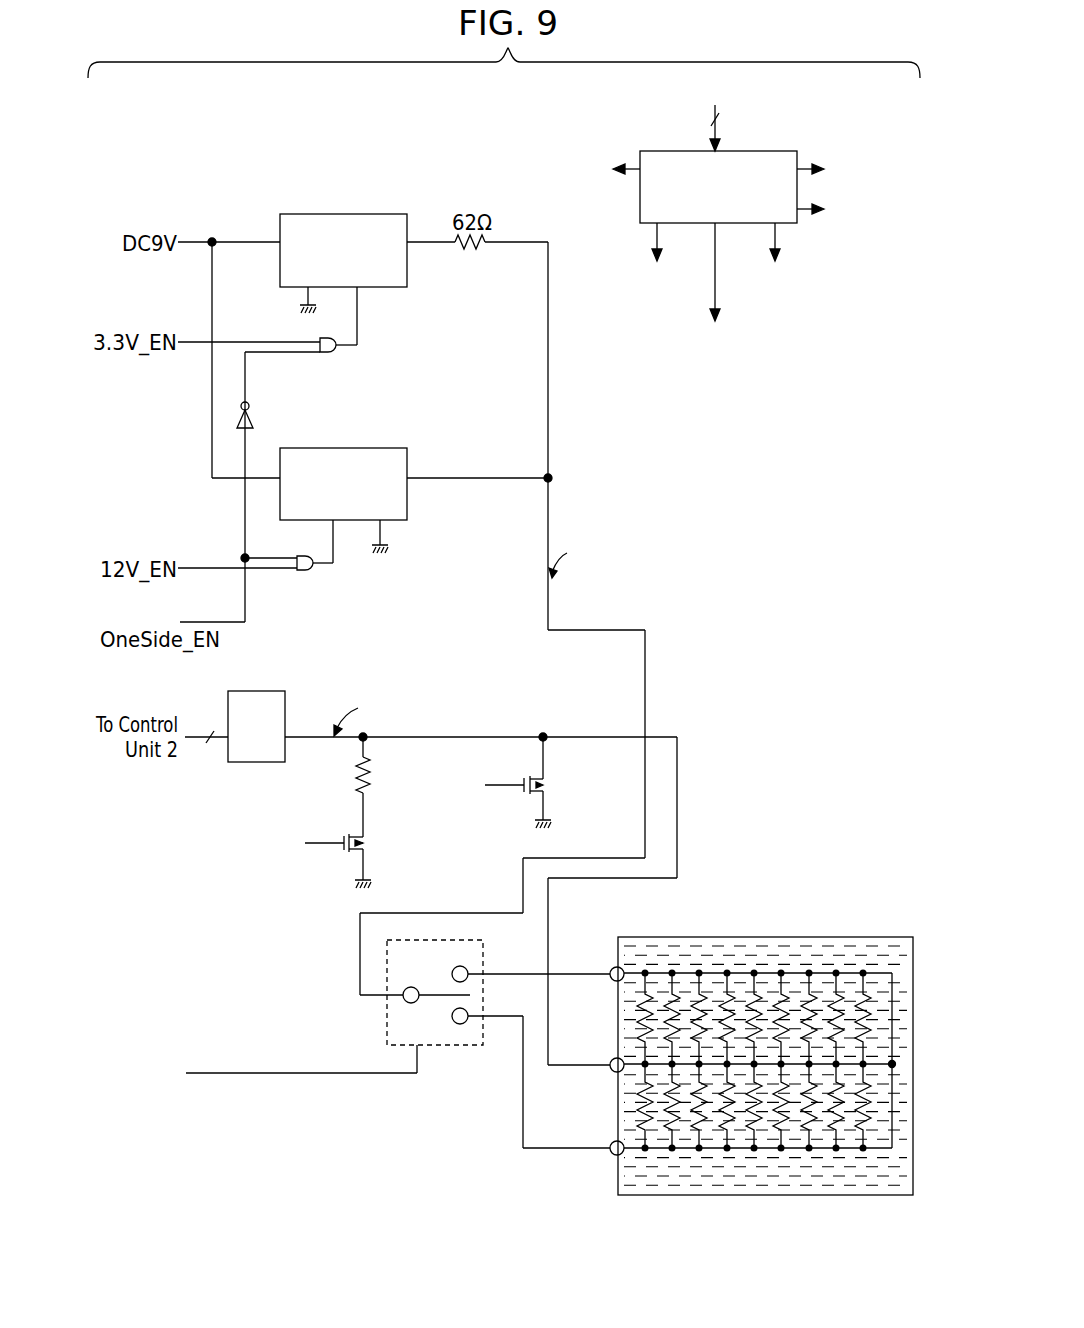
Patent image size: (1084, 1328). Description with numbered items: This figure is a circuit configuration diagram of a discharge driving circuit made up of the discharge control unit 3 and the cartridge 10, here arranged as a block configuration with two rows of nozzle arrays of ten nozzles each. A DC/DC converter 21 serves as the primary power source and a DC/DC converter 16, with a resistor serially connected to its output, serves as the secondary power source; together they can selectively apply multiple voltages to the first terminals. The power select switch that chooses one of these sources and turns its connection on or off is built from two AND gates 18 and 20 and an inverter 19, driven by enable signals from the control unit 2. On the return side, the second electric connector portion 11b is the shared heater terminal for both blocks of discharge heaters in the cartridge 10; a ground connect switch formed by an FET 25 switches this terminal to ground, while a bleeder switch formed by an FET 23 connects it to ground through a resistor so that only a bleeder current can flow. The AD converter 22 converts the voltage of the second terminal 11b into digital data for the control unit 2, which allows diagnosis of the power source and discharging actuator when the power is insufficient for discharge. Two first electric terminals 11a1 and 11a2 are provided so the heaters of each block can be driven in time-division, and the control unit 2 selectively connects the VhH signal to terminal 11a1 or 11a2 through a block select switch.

The control unit 2 is at (762, 151).
The discharge control unit 3 is at (431, 695).
The cartridge 10 is at (747, 1196).
The first electric terminal 11a1 is at (728, 963).
The first electric terminal 11a2 is at (728, 1138).
The second electric connector portion 11b is at (733, 1054).
The DC/DC converter 16 is at (346, 214).
The AND gate 18 is at (338, 352).
The inverter 19 is at (249, 404).
The AND gate 20 is at (314, 571).
The DC/DC converter 21 is at (343, 448).
The AD converter 22 is at (262, 691).
The FET 23 is at (368, 843).
The FET 25 is at (548, 785).